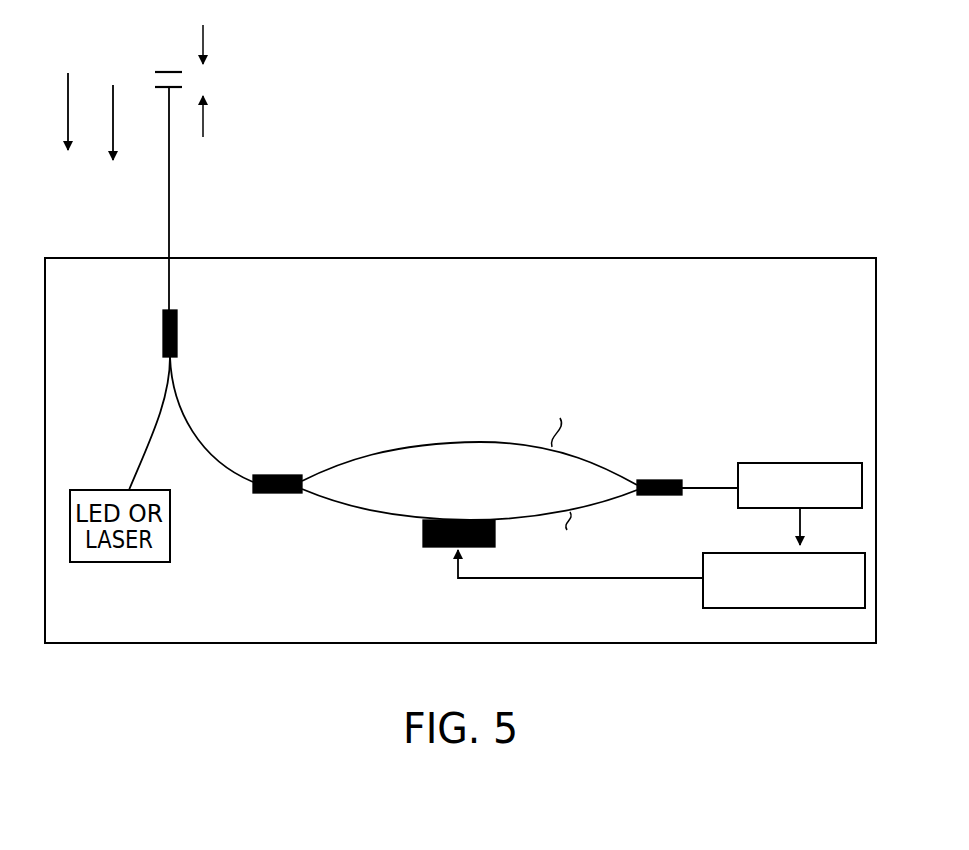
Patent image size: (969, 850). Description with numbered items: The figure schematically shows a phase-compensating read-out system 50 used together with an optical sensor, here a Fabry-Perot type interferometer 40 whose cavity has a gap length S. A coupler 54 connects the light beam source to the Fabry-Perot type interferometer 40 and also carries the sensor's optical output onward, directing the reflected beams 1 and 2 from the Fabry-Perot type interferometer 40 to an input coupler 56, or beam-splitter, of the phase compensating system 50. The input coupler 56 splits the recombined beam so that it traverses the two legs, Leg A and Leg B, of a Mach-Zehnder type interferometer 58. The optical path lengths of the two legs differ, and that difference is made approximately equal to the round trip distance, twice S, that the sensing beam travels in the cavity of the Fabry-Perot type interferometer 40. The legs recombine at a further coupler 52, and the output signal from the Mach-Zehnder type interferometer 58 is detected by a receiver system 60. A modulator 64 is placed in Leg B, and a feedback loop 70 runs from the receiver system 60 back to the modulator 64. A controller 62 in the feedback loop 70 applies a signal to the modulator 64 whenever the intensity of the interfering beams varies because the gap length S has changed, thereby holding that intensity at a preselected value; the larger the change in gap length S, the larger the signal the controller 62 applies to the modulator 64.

The Fabry-Perot type interferometer 40 is at (155, 82).
The gap length S is at (206, 80).
The reflected beam 1 is at (114, 148).
The reflected beam 2 is at (67, 138).
The phase-compensating read-out system 50 is at (657, 258).
The output coupler 52 is at (668, 480).
The coupler 54 is at (177, 328).
The input coupler 56 is at (285, 475).
The Mach-Zehnder type interferometer 58 is at (388, 436).
The receiver system 60 is at (780, 463).
The controller 62 is at (825, 553).
The modulator 64 is at (420, 550).
The feedback loop 70 is at (622, 578).